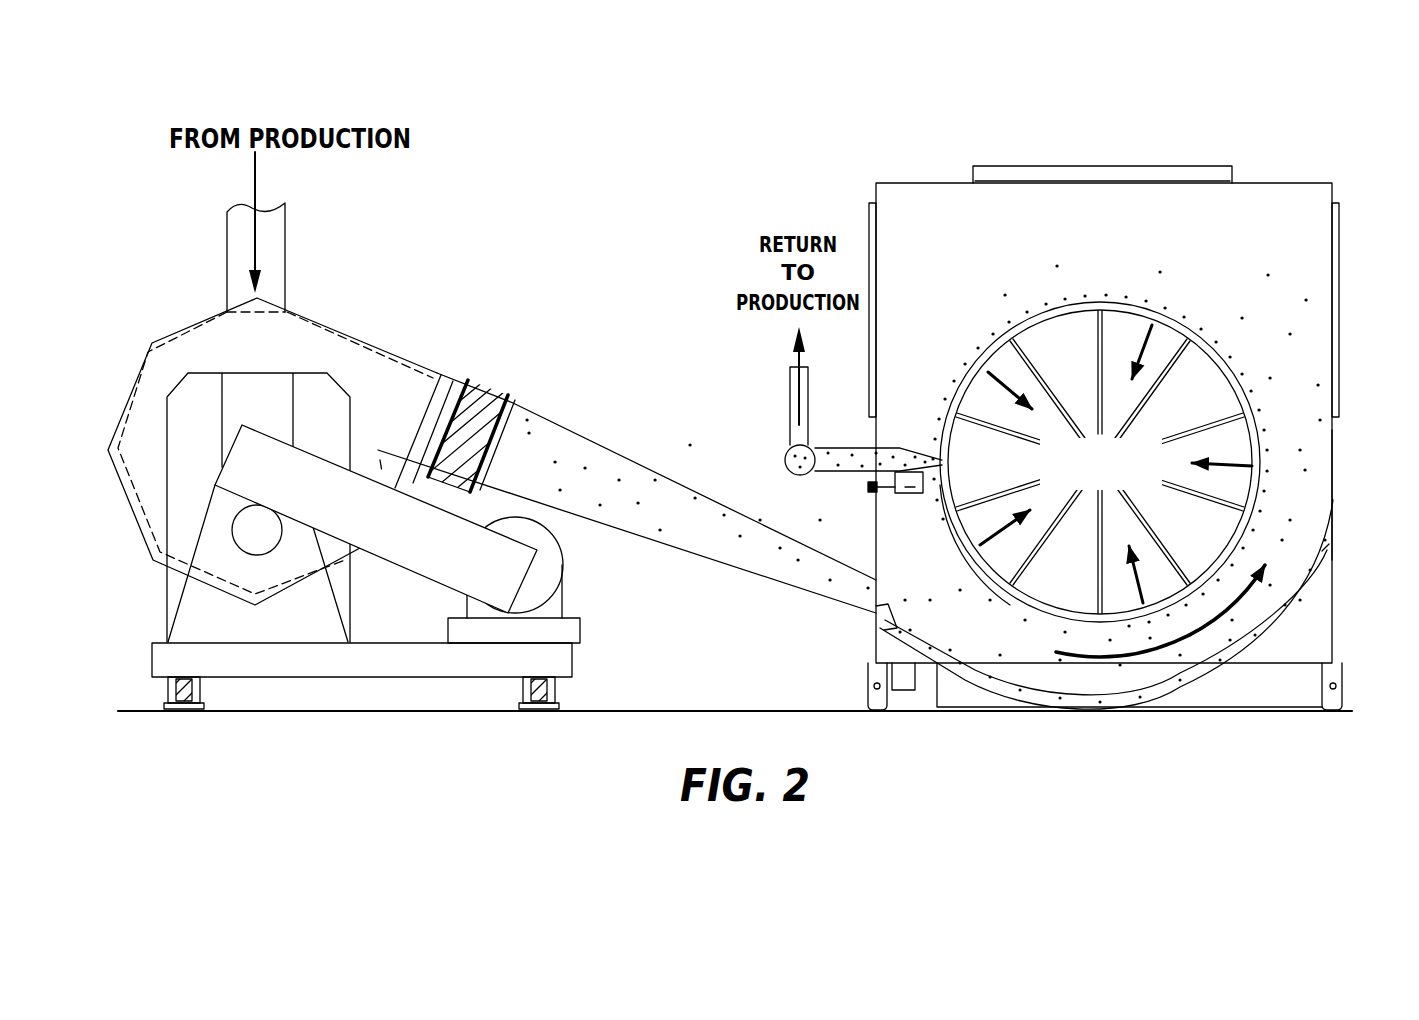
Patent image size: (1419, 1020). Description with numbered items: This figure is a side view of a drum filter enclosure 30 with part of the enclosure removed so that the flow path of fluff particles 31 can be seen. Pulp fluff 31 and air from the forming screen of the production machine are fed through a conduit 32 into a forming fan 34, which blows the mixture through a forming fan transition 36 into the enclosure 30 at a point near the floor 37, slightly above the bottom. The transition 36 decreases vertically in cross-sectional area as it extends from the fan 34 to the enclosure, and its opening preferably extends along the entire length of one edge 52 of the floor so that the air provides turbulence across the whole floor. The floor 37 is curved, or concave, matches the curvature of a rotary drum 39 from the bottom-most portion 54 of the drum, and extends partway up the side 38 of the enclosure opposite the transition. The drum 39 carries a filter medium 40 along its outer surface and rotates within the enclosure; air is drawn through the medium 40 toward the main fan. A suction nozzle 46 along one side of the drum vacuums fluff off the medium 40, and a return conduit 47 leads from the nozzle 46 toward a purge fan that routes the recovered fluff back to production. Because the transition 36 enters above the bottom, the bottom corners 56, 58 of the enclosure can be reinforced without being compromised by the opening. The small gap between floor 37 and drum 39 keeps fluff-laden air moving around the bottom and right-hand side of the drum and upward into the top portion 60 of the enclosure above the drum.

The drum filter enclosure 30 is at (851, 126).
The fluff particles 31 is at (1265, 175).
The conduit 32 is at (288, 233).
The forming fan 34 is at (418, 348).
The forming fan transition 36 is at (680, 542).
The floor 37 is at (1008, 678).
The side 38 is at (1338, 478).
The rotary drum 39 is at (968, 567).
The filter medium 40 is at (1050, 310).
The suction nozzle 46 is at (785, 466).
The return conduit 47 is at (792, 393).
The edge of the floor 52 is at (885, 609).
The bottom-most portion of the rotary drum 54 is at (1100, 628).
The bottom corner 56 is at (893, 692).
The bottom corner 58 is at (1307, 694).
The top portion of the enclosure 60 is at (1083, 232).